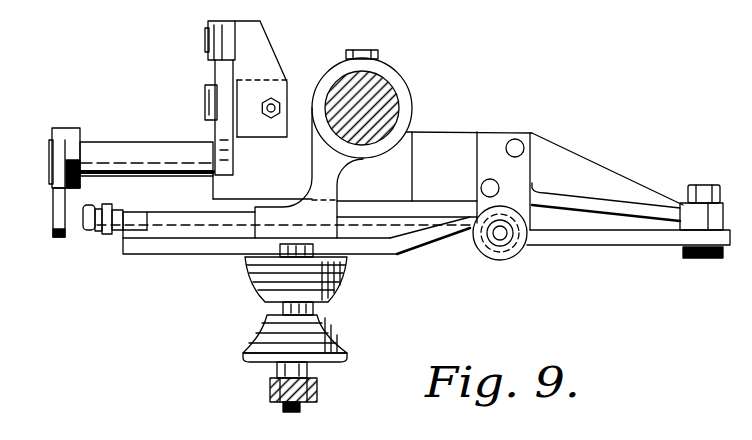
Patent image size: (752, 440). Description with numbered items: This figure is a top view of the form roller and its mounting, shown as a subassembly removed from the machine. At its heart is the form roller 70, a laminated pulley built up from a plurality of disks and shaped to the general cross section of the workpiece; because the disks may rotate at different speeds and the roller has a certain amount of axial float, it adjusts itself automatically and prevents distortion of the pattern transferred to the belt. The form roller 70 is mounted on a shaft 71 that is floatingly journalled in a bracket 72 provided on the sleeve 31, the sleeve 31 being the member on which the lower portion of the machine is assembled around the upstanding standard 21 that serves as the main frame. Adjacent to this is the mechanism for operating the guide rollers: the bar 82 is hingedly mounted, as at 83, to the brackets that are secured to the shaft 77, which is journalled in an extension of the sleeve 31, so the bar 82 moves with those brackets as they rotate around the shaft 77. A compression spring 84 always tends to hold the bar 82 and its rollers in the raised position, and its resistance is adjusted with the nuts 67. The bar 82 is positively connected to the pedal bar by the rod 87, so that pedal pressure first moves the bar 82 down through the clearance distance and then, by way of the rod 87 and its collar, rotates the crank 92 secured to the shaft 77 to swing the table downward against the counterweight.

The standard 21 is at (366, 80).
The sleeve 31 is at (403, 100).
The shaft 77 is at (152, 147).
The crank 92 is at (52, 217).
The rod 87 is at (108, 234).
The nuts 67 is at (488, 236).
The compression spring 84 is at (500, 255).
The bar 82 is at (554, 236).
The hinge mounting 83 is at (702, 259).
The form roller 70 is at (262, 352).
The shaft 71 is at (307, 368).
The bracket 72 is at (281, 393).